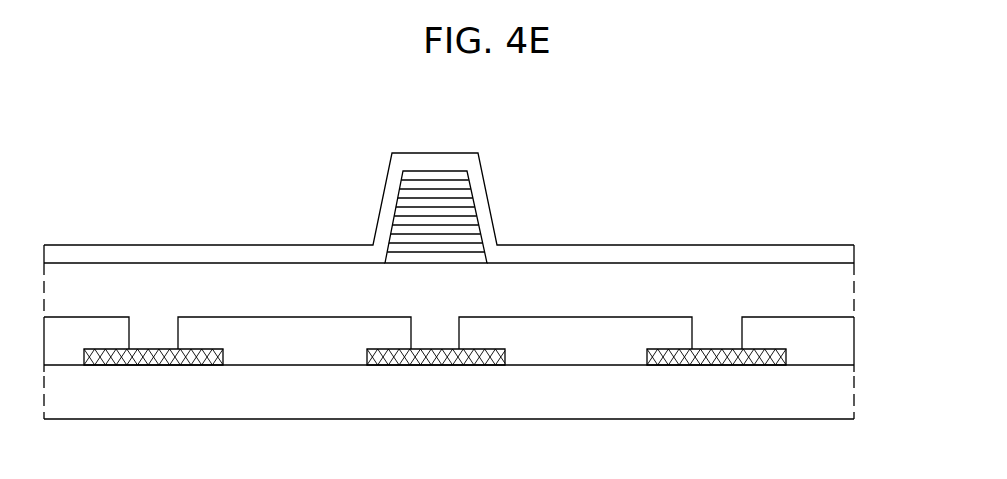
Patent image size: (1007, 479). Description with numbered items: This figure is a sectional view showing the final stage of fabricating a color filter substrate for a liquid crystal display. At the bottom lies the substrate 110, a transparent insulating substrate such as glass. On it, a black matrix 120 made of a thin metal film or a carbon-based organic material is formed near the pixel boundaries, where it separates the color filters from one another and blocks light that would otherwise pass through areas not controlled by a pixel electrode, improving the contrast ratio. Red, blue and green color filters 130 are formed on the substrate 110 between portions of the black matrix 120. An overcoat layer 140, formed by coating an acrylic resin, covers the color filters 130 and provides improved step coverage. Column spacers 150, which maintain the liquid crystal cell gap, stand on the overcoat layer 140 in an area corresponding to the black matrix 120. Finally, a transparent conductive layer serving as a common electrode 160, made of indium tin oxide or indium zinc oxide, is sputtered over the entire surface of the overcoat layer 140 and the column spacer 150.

The substrate 110 is at (847, 392).
The black matrix 120 is at (720, 366).
The color filters 130 is at (847, 340).
The overcoat layer 140 is at (847, 289).
The column spacers 150 is at (438, 180).
The common electrode 160 is at (847, 254).